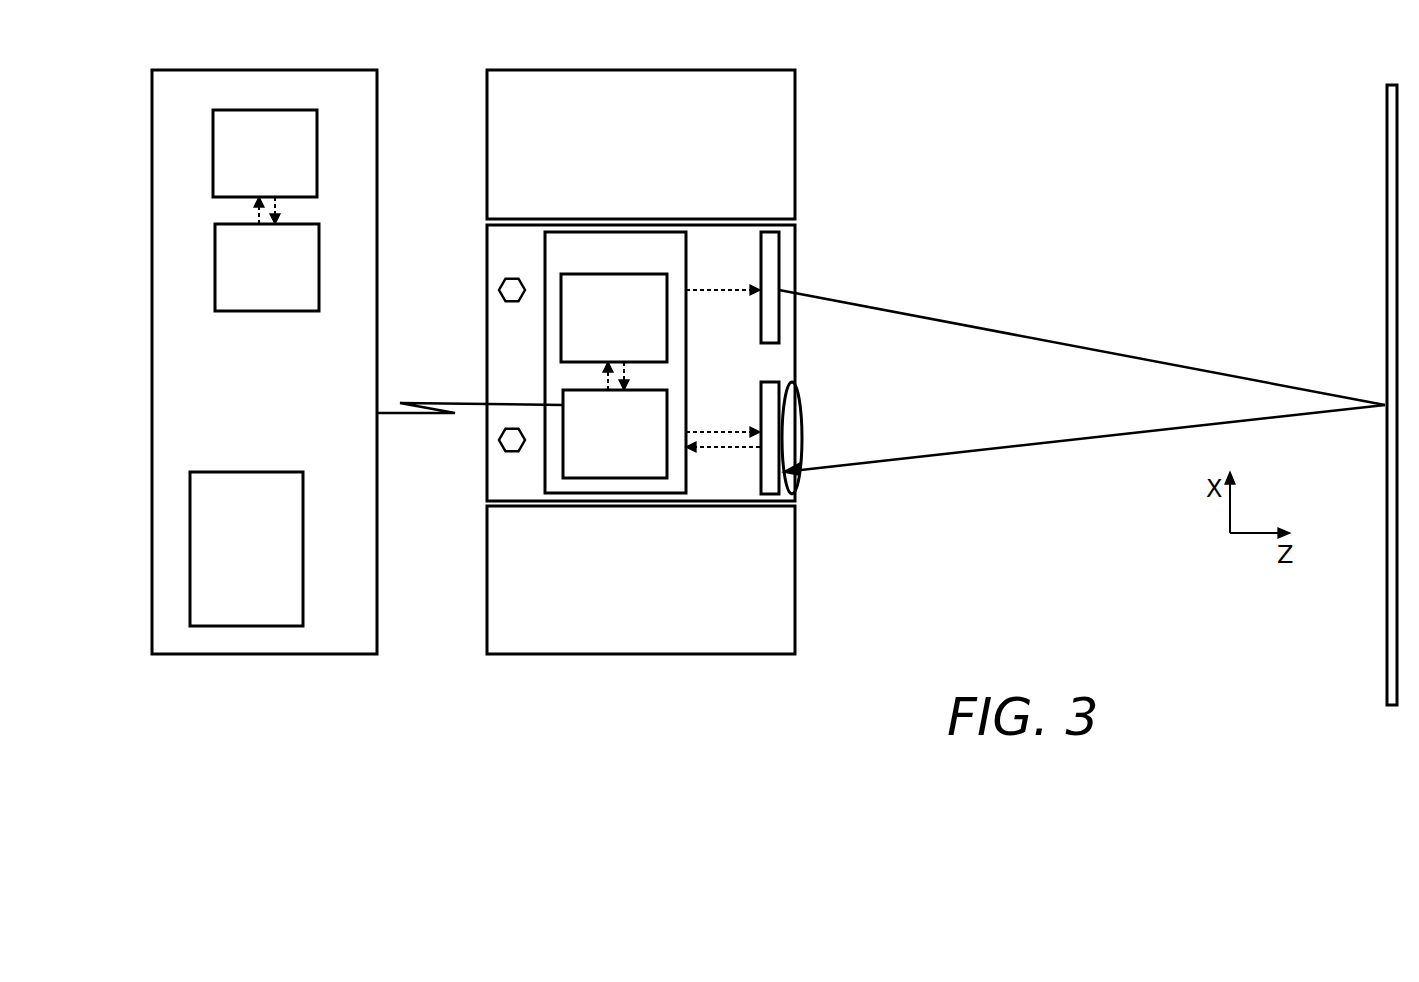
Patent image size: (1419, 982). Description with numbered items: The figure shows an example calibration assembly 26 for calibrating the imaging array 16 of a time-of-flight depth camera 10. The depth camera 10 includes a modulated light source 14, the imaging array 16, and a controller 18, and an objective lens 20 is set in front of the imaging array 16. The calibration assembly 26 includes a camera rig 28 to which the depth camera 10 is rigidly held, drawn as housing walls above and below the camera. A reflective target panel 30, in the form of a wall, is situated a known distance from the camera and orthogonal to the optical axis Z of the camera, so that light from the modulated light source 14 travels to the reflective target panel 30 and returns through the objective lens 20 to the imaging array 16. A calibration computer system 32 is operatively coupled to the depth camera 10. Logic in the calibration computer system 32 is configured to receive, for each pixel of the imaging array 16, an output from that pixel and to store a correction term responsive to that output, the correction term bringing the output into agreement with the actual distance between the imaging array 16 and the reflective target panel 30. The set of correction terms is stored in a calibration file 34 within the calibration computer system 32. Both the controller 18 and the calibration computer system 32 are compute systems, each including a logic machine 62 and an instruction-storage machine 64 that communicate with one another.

The depth camera 10 is at (499, 382).
The modulated light source 14 is at (780, 252).
The imaging array 16 is at (762, 396).
The controller 18 is at (600, 264).
The objective lens 20 is at (803, 432).
The calibration assembly 26 is at (963, 137).
The camera rig 28 is at (626, 156).
The reflective target panel 30 is at (1387, 183).
The calibration computer system 32 is at (249, 372).
The calibration file 34 is at (231, 559).
The logic machine 62 is at (250, 162).
The instruction-storage machine 64 is at (252, 277).